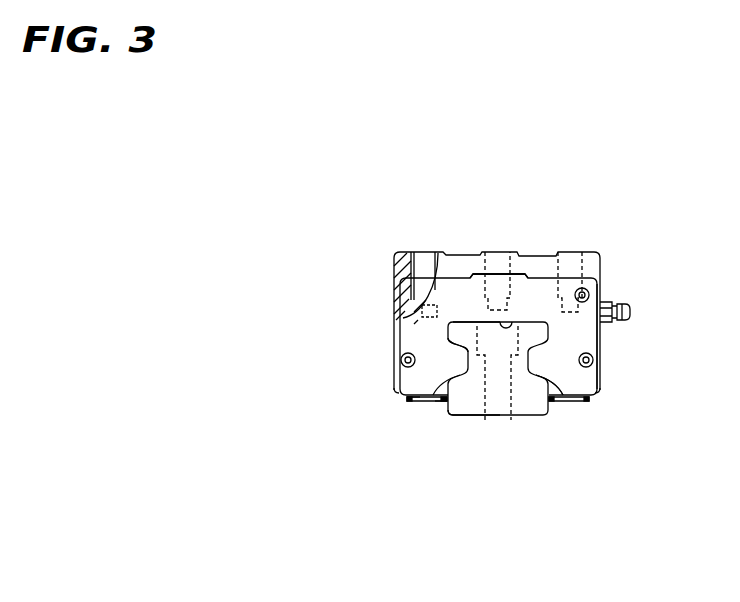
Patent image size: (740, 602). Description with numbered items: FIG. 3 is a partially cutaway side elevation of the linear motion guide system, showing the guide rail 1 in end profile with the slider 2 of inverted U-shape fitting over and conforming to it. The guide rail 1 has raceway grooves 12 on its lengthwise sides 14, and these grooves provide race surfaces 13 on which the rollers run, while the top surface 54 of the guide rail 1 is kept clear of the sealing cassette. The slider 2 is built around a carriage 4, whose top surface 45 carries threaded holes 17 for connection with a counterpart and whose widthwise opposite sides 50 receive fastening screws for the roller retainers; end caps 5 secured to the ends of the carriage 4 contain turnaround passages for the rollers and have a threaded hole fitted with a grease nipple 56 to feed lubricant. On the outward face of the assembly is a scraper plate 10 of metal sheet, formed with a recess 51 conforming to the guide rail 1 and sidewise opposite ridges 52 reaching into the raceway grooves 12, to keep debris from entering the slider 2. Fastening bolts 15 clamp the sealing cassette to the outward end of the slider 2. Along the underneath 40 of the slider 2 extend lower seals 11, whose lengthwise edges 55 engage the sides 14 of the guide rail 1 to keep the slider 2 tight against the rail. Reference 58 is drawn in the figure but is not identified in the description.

The guide rail 1 is at (512, 355).
The slider 2 is at (499, 291).
The carriage 4 is at (588, 256).
The end caps 5 is at (516, 277).
The scraper plates 10 is at (416, 334).
The lower seals 11 is at (492, 463).
The raceway grooves 12 is at (562, 396).
The race surfaces 13 is at (448, 337).
The lengthwise sides 14 is at (440, 401).
The fastening bolts 15 is at (401, 361).
The threaded holes 17 is at (418, 254).
The underneath 40 is at (407, 400).
The top surface 45 is at (486, 273).
The widthwise opposite sides 50 is at (598, 342).
The recess 51 is at (514, 320).
The ridges 52 is at (472, 402).
The top surface 54 is at (472, 322).
The lengthwise edges 55 is at (443, 402).
The grease nipple 56 is at (622, 308).
The bolt hole 58 is at (490, 396).